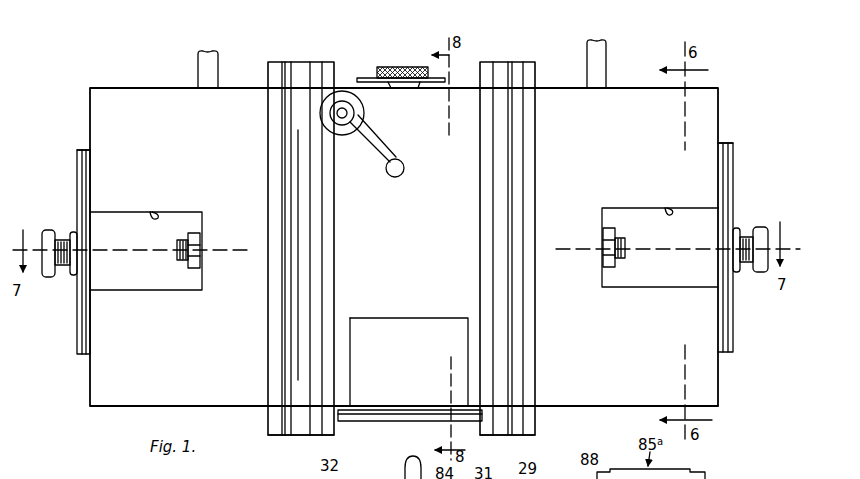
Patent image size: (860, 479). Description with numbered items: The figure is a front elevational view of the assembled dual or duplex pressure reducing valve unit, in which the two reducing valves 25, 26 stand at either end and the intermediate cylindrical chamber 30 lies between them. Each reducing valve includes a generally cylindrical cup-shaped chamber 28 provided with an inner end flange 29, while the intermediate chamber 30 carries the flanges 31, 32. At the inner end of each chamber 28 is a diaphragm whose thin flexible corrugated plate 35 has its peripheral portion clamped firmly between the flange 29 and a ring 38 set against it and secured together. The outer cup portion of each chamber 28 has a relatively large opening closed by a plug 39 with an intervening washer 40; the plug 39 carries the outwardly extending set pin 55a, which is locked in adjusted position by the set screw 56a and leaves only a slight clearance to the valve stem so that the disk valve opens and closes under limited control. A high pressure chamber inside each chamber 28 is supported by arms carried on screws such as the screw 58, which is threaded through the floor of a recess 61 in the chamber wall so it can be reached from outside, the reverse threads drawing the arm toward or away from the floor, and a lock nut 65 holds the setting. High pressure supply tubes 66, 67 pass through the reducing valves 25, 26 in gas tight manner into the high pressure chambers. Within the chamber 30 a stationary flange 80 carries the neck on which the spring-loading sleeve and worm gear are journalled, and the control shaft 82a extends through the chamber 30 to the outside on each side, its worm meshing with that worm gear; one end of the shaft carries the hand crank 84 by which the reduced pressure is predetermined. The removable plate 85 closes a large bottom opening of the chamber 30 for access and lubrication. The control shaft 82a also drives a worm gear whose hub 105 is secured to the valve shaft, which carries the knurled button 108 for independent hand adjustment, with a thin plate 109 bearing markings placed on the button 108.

The reducing valve 25 is at (140, 392).
The reducing valve 26 is at (613, 384).
The cylindrical chamber 28 is at (404, 250).
The inner end flange 29 is at (282, 62).
The intermediate cylindrical chamber 30 is at (463, 86).
The flange 31 is at (326, 62).
The flange 32 is at (488, 60).
The corrugated plate 35 is at (289, 62).
The ring 38 is at (305, 434).
The plug 39 is at (76, 165).
The washer 40 is at (84, 150).
The set pin 55a is at (65, 270).
The set screw 56a is at (73, 232).
The screw 58 is at (178, 250).
The recess 61 is at (153, 210).
The lock nut 65 is at (190, 270).
The high pressure supply tube 66 is at (197, 60).
The high pressure supply tube 67 is at (597, 52).
The flange 80 is at (316, 264).
The control shaft 82a is at (342, 92).
The hand crank 84 is at (370, 140).
The removable plate 85 is at (390, 421).
The hub 105 is at (419, 88).
The knurled button 108 is at (410, 66).
The thin plate 109 is at (366, 78).